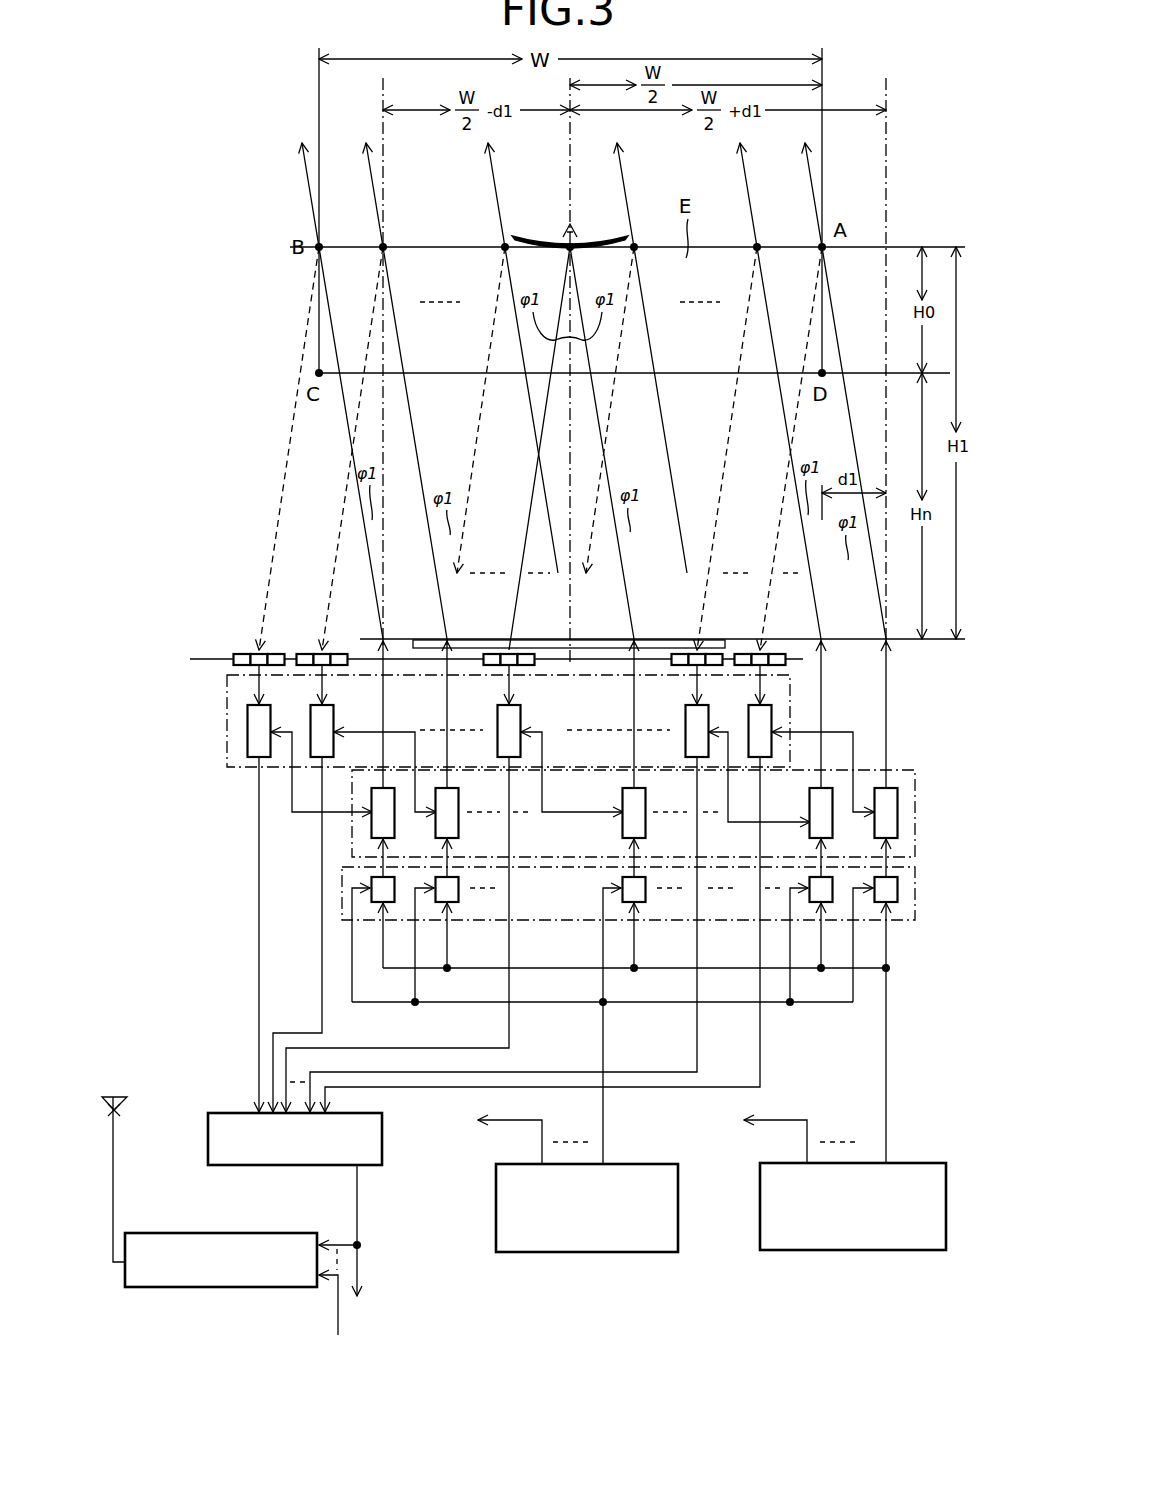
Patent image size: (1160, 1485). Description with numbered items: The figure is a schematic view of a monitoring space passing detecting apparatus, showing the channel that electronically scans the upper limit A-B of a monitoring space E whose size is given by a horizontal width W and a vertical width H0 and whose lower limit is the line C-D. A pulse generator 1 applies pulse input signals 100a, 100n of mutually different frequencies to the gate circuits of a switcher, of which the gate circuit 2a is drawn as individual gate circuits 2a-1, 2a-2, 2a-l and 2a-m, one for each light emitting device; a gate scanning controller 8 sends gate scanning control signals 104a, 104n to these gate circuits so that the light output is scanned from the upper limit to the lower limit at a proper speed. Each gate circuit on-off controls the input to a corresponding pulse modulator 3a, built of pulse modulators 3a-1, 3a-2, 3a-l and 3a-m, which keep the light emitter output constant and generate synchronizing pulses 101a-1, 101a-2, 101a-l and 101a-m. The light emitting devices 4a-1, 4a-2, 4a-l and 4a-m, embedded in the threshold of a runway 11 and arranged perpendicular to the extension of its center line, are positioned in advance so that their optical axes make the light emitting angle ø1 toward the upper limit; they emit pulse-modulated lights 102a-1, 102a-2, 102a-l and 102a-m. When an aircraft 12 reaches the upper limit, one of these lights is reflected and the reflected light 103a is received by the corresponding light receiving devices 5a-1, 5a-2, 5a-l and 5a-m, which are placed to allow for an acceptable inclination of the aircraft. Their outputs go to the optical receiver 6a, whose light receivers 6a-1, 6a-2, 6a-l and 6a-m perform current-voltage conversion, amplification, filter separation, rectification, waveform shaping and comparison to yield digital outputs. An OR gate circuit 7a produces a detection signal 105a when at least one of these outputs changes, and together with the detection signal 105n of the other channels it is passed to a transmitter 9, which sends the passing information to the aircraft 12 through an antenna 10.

The pulse generator 1 is at (857, 1252).
The gate circuit 2a is at (917, 907).
The gate circuit 2a-1 is at (895, 903).
The gate circuit 2a-2 is at (808, 903).
The gate circuit 2a-l is at (647, 902).
The gate circuit 2a-m is at (370, 889).
The pulse modulator 3a is at (915, 770).
The pulse modulator 3a-1 is at (898, 820).
The pulse modulator 3a-2 is at (808, 827).
The pulse modulator 3a-l is at (647, 823).
The pulse modulator 3a-m is at (371, 827).
The light emitting device 4a-1 is at (890, 641).
The light emitting device 4a-2 is at (827, 637).
The light emitting device 4a-l is at (665, 638).
The light emitting device 4a-m is at (386, 637).
The light receiving device 5a-1 is at (777, 652).
The light receiving device 5a-2 is at (742, 652).
The light receiving device 5a-l is at (524, 652).
The light receiving device 5a-m is at (238, 654).
The optical receiver 6a is at (233, 768).
The light receiver 6a-1 is at (748, 724).
The light receiver 6a-2 is at (684, 727).
The light receiver 6a-l is at (522, 712).
The light receiver 6a-m is at (247, 704).
The OR gate circuit 7a is at (384, 1137).
The gate scanning controller 8 is at (586, 1253).
The transmitter 9 is at (161, 1232).
The antenna 10 is at (113, 1093).
The runway 11 is at (599, 645).
The aircraft 12 is at (556, 235).
The pulse input signal 100a is at (887, 1058).
The pulse input signal 100n is at (792, 1118).
The synchronizing pulse 101a-1 is at (850, 728).
The synchronizing pulse 101a-2 is at (795, 821).
The synchronizing pulse 101a-l is at (577, 811).
The synchronizing pulse 101a-m is at (291, 813).
The pulse-modulated light 102a-1 is at (840, 352).
The pulse-modulated light 102a-2 is at (781, 398).
The pulse-modulated light 102a-l is at (598, 412).
The pulse-modulated light 102a-m is at (340, 395).
The reflected light 103a is at (527, 521).
The gate scanning control signal 104a is at (605, 1118).
The gate scanning control signal 104n is at (507, 1122).
The detection signal 105a is at (360, 1262).
The detection signal 105n is at (338, 1303).